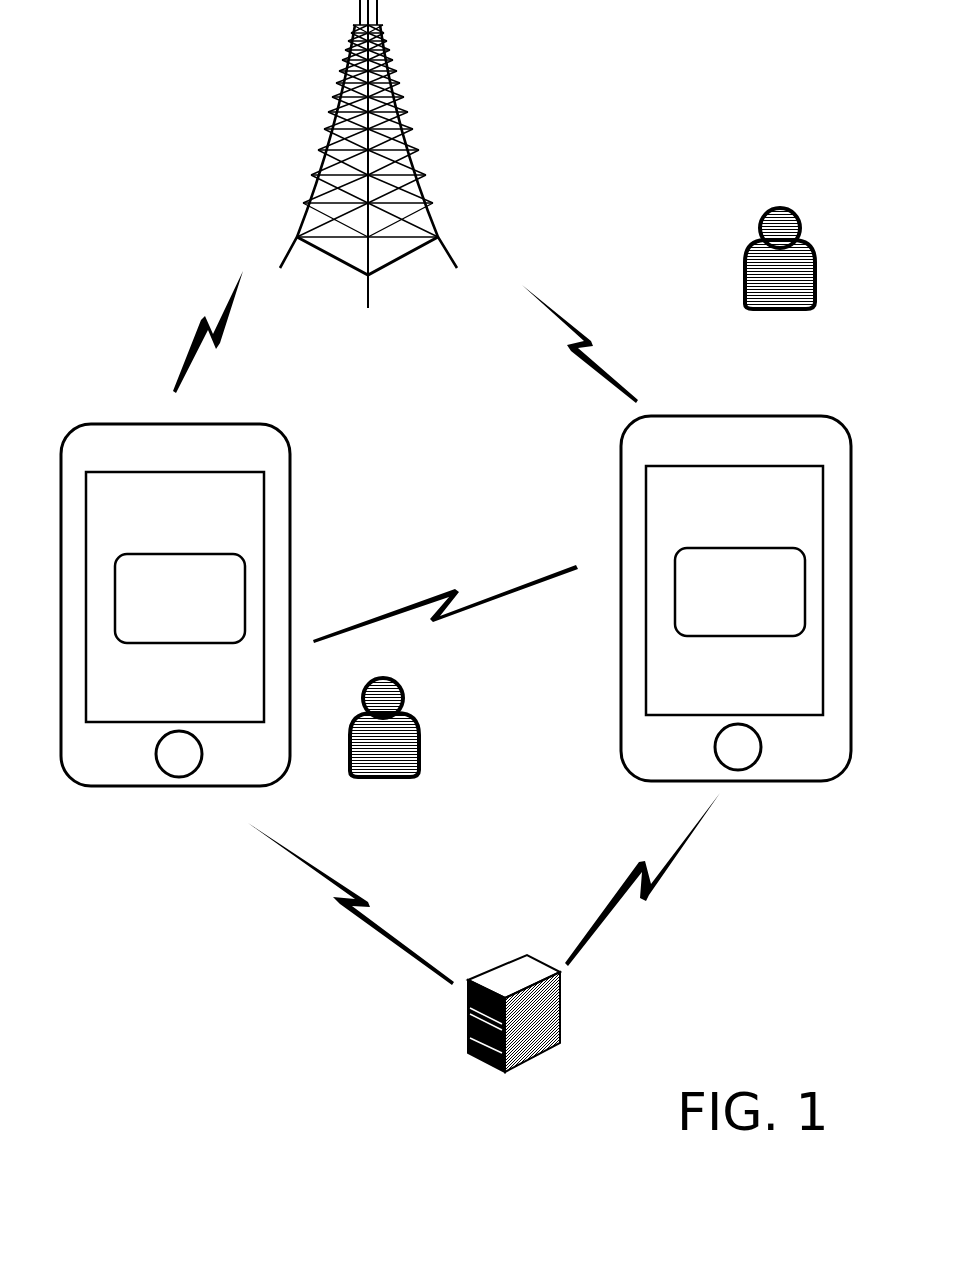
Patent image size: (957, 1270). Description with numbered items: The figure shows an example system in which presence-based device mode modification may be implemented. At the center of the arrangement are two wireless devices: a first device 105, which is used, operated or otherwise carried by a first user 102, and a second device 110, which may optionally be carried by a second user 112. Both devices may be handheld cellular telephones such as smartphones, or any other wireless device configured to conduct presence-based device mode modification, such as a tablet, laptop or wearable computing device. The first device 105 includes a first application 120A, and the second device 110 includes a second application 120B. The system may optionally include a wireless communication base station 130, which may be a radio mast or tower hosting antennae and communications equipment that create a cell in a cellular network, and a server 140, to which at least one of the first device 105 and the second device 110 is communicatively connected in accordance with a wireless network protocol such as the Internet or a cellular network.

The wireless communication base station 130 is at (385, 42).
The first device 105 is at (124, 425).
The second device 110 is at (745, 421).
The first application 120A is at (180, 598).
The second application 120B is at (740, 592).
The first user 102 is at (369, 727).
The second user 112 is at (767, 258).
The server 140 is at (514, 1003).